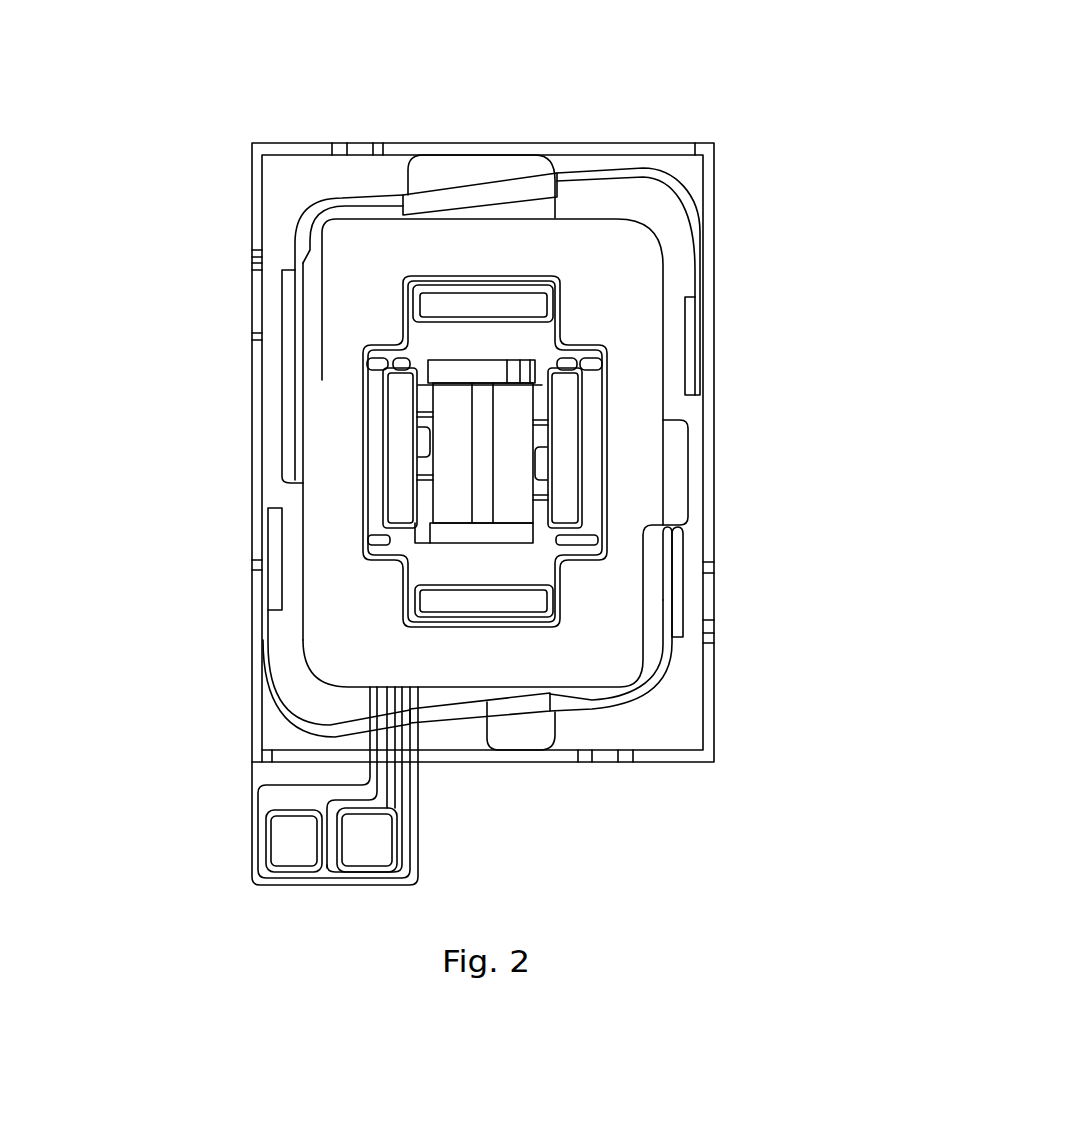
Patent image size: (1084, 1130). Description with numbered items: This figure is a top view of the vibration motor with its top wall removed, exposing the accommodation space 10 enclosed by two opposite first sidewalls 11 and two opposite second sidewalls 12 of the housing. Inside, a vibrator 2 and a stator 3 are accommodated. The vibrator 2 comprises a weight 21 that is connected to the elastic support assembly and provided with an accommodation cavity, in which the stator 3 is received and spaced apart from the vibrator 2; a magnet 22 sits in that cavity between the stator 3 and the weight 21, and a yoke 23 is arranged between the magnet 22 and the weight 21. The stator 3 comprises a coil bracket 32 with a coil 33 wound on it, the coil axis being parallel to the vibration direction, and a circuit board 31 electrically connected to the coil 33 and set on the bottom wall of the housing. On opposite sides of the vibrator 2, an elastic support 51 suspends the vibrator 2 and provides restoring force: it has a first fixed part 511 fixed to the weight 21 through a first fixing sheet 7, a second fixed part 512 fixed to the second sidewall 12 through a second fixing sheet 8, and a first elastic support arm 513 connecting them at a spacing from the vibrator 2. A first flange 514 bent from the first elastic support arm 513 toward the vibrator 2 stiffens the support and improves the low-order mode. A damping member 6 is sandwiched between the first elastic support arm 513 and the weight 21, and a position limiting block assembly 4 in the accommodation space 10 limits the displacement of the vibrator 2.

The accommodation space 10 is at (400, 385).
The first sidewall 11 is at (357, 155).
The second sidewall 12 is at (258, 200).
The position limiting block assembly 4 is at (488, 173).
The elastic support 51 is at (501, 526).
The first fixed part 511 is at (667, 608).
The second fixed part 512 is at (267, 603).
The first elastic support arm 513 is at (665, 693).
The first flange 514 is at (528, 703).
The vibrator 2 is at (338, 451).
The weight 21 is at (360, 330).
The magnet 22 is at (472, 302).
The yoke 23 is at (585, 443).
The stator 3 is at (474, 451).
The coil bracket 32 is at (480, 535).
The coil 33 is at (485, 457).
The damping member 6 is at (477, 697).
The first fixing sheet 7 is at (675, 562).
The second fixing sheet 8 is at (273, 558).
The circuit board 31 is at (295, 840).